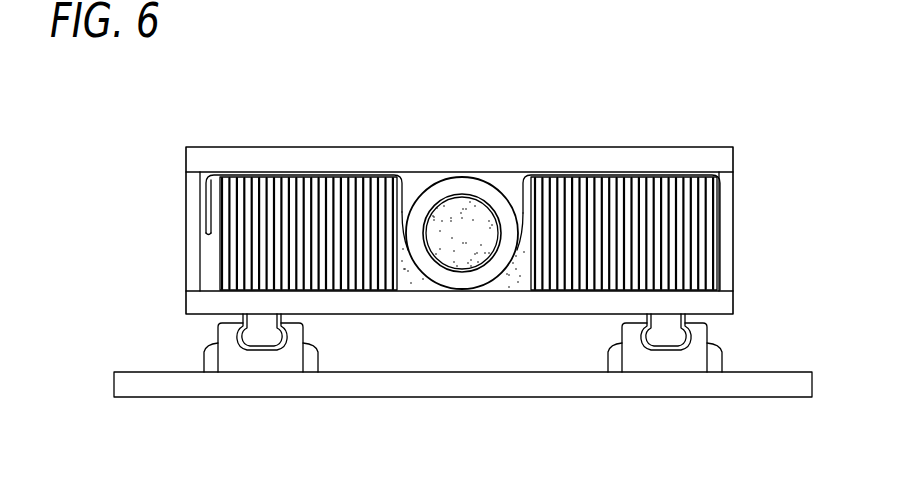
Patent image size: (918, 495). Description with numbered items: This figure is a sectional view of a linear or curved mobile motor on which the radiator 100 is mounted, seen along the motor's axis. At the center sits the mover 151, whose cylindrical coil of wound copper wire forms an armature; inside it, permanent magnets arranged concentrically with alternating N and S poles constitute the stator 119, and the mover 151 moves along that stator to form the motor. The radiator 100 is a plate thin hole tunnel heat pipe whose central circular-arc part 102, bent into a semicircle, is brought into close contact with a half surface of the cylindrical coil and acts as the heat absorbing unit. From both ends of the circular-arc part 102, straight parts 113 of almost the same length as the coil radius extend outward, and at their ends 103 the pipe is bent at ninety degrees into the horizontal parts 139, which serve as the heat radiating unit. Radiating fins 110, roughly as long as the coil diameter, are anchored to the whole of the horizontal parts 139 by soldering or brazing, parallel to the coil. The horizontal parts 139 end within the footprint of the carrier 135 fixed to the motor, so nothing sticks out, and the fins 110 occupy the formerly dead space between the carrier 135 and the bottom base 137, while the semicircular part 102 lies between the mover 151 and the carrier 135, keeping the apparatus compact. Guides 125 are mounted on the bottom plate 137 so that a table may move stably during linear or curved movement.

The radiator 100 is at (266, 166).
The semicircular circular-arc part 102 is at (460, 291).
The ends of straight parts 103 is at (400, 177).
The radiating fins 110 is at (237, 263).
The straight parts 113 is at (404, 208).
The stator 119 is at (470, 243).
The guides 125 is at (257, 338).
The carrier 135 is at (205, 165).
The bottom base 137 is at (720, 303).
The horizontal parts 139 is at (223, 174).
The mover 151 is at (463, 182).